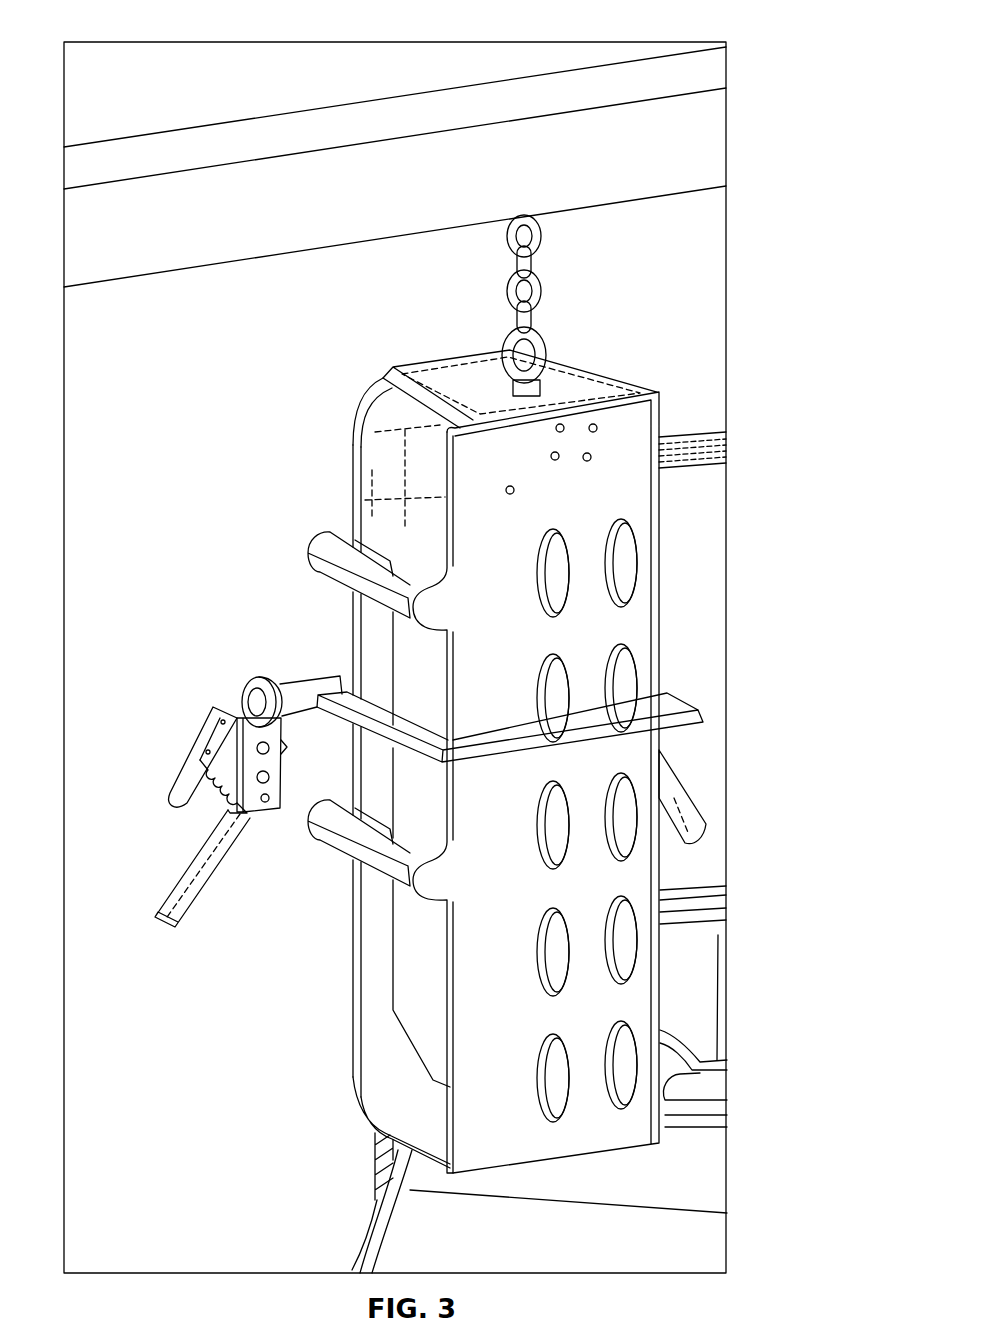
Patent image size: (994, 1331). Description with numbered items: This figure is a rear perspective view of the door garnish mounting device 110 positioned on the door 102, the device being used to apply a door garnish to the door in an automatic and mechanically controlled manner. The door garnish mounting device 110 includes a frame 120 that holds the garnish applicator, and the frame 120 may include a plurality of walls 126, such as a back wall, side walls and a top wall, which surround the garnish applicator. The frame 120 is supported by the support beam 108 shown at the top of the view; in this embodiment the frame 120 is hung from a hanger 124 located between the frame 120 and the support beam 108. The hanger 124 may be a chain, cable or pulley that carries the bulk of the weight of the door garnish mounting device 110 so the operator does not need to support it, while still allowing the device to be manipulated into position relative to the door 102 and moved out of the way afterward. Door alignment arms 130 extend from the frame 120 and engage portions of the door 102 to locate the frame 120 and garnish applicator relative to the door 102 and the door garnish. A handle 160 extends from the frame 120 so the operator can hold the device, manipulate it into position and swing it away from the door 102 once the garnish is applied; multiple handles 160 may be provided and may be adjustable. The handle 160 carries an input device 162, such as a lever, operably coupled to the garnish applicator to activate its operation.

The door 102 is at (703, 1172).
The support beam 108 is at (582, 125).
The door garnish mounting device 110 is at (535, 748).
The frame 120 is at (630, 487).
The hanger 124 is at (543, 290).
The walls 126 is at (593, 372).
The door alignment arms 130 is at (343, 563).
The handle 160 is at (186, 880).
The input device 162 is at (181, 792).